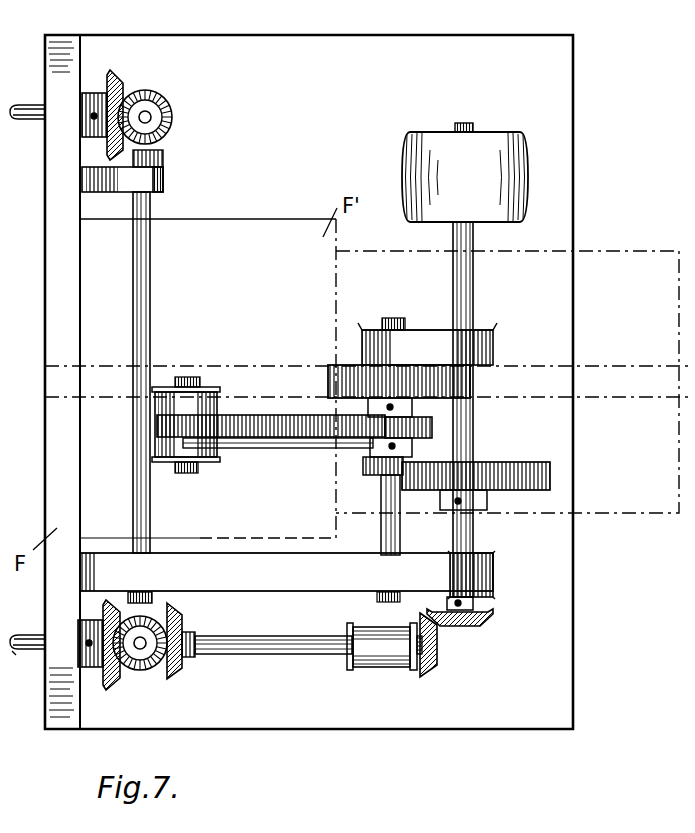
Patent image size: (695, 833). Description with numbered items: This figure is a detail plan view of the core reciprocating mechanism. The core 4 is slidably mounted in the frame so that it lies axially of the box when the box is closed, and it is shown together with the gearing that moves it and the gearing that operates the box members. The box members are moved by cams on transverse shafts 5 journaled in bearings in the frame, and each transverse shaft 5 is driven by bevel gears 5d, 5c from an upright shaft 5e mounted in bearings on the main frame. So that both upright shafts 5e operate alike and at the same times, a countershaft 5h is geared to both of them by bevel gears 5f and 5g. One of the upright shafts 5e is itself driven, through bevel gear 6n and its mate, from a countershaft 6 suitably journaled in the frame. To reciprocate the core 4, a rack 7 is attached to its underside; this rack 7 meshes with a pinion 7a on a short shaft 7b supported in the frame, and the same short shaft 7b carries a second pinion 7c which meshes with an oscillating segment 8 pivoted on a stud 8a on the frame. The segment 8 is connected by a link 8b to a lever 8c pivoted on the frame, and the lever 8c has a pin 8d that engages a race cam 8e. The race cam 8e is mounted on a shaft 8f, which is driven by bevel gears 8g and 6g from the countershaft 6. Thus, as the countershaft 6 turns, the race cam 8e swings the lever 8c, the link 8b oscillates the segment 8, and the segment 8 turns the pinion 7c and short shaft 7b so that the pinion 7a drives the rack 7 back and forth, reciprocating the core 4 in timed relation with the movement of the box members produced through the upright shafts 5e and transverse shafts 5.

The core 4 is at (590, 263).
The transverse shaft 5 is at (32, 127).
The bevel gear 5c is at (115, 83).
The bevel gear 5d is at (162, 120).
The upright shaft 5e is at (149, 114).
The bevel gear 5f is at (165, 600).
The bevel gear 5g is at (167, 153).
The countershaft 5h is at (146, 314).
The countershaft 6 is at (270, 648).
The bevel gear 6g is at (432, 678).
The bevel gear 6n is at (178, 667).
The rack 7 is at (609, 392).
The pinion 7a is at (330, 385).
The short shaft 7b is at (386, 543).
The pinion 7c is at (432, 427).
The oscillating segment 8 is at (299, 450).
The stud 8a is at (185, 470).
The link 8b is at (265, 450).
The lever 8c is at (367, 460).
The pin 8d is at (372, 470).
The race cam 8e is at (552, 477).
The shaft 8f is at (473, 443).
The bevel gear 8g is at (482, 628).